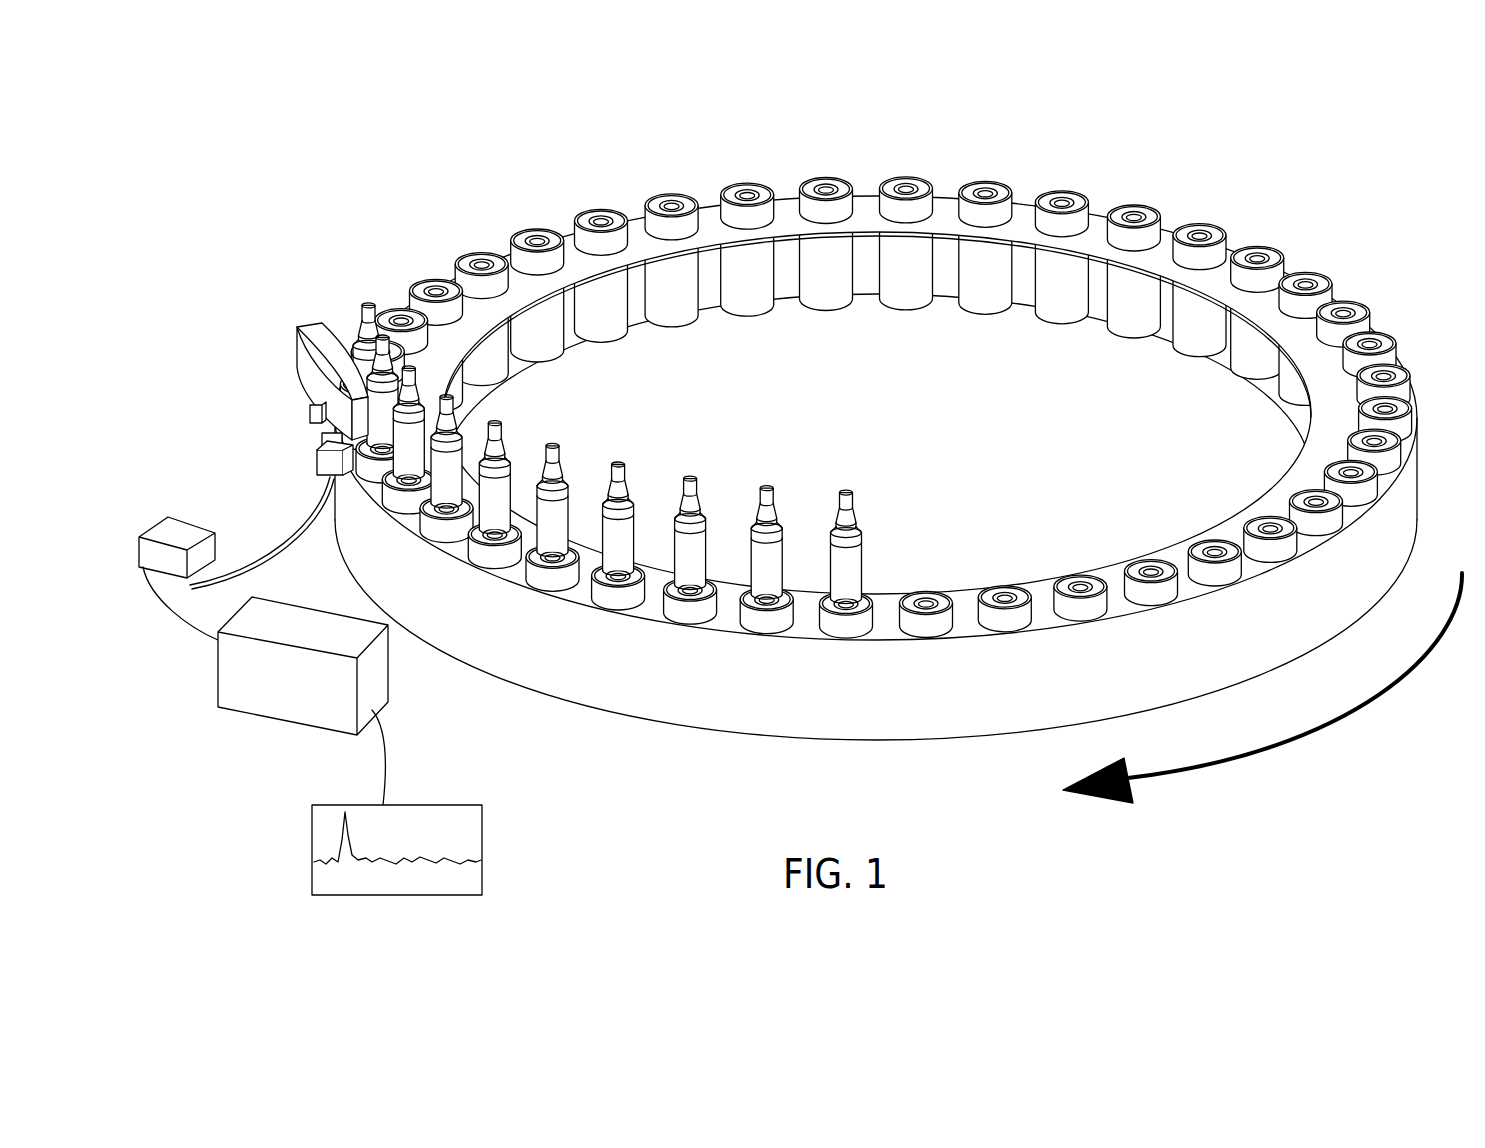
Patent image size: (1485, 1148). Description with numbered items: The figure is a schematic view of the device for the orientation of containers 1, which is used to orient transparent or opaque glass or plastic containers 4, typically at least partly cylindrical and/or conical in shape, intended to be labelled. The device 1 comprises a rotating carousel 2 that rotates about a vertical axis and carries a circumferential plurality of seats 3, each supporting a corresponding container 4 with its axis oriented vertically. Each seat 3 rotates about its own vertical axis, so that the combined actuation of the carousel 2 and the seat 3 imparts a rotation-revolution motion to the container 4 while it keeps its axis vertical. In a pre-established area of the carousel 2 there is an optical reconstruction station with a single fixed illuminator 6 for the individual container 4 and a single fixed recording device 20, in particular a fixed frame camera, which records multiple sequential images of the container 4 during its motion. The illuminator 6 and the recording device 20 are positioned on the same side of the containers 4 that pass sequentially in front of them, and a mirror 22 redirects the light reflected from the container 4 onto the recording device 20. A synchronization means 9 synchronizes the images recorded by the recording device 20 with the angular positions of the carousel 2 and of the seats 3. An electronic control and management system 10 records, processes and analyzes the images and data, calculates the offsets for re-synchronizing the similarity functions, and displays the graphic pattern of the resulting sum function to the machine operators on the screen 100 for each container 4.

The device for the orientation of containers 1 is at (330, 176).
The rotating carousel 2 is at (597, 712).
The seat 3 is at (641, 561).
The container 4 is at (568, 473).
The illuminator 6 is at (296, 323).
The synchronization means 9 is at (157, 523).
The electronic control and management system 10 is at (255, 712).
The recording device 20 is at (314, 461).
The mirror 22 is at (308, 412).
The screen 100 is at (487, 856).